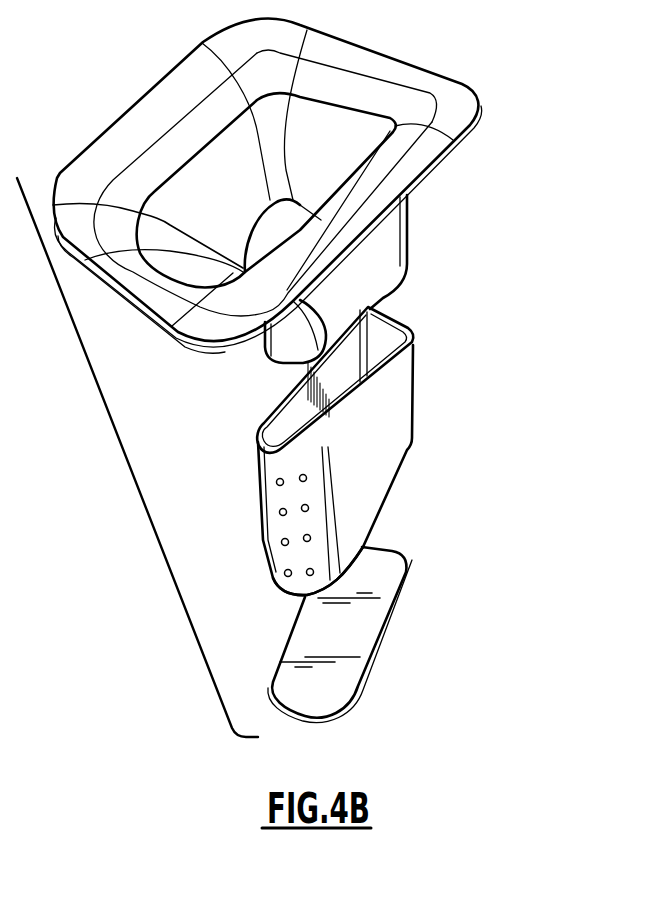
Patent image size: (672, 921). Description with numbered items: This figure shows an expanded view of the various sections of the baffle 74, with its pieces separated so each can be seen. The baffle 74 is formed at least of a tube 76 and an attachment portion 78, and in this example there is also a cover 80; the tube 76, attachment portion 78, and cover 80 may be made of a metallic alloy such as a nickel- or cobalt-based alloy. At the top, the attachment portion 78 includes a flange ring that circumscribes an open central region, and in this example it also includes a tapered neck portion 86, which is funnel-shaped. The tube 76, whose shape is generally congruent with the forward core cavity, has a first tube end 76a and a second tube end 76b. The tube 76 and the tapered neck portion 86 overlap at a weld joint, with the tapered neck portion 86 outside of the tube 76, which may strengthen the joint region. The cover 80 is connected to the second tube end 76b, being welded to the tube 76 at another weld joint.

The baffle 74 is at (123, 457).
The attachment portion 78 is at (393, 58).
The tapered neck portion 86 is at (420, 195).
The first tube end 76a is at (410, 327).
The tube 76 is at (331, 494).
The second tube end 76b is at (275, 590).
The cover 80 is at (380, 640).